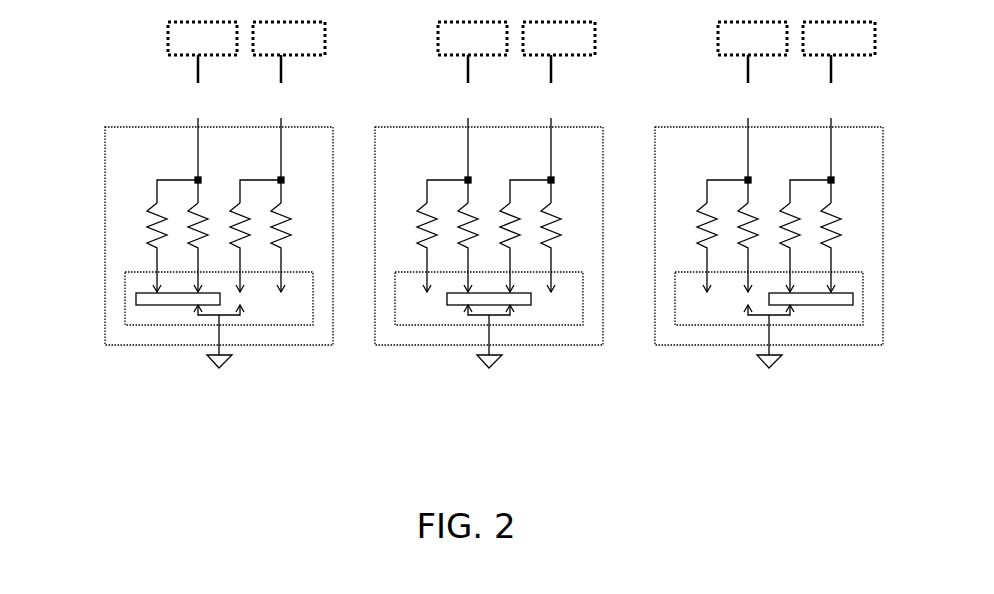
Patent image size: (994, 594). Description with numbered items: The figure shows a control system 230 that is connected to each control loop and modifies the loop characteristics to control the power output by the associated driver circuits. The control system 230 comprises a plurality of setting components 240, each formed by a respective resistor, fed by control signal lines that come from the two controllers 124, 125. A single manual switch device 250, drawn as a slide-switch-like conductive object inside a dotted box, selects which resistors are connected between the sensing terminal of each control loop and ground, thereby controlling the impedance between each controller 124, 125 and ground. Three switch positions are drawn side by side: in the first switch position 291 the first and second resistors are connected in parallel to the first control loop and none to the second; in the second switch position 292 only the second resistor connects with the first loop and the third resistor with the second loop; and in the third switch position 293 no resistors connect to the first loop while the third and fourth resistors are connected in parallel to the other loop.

The controller 124 is at (477, 38).
The controller 125 is at (564, 38).
The control system 230 is at (462, 173).
The setting components 240 is at (118, 222).
The single manual switch device 250 is at (166, 334).
The first switch position 291 is at (197, 414).
The second switch position 292 is at (499, 415).
The third switch position 293 is at (756, 414).